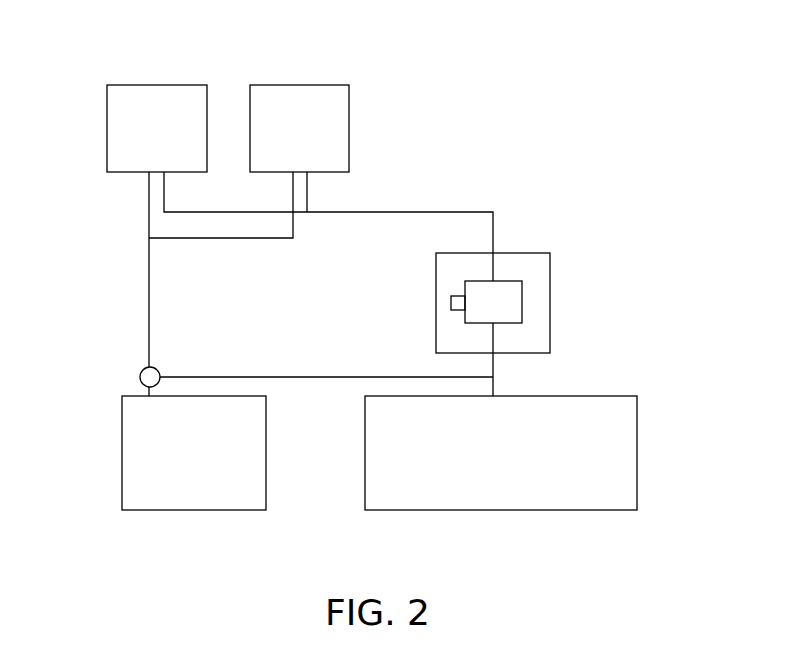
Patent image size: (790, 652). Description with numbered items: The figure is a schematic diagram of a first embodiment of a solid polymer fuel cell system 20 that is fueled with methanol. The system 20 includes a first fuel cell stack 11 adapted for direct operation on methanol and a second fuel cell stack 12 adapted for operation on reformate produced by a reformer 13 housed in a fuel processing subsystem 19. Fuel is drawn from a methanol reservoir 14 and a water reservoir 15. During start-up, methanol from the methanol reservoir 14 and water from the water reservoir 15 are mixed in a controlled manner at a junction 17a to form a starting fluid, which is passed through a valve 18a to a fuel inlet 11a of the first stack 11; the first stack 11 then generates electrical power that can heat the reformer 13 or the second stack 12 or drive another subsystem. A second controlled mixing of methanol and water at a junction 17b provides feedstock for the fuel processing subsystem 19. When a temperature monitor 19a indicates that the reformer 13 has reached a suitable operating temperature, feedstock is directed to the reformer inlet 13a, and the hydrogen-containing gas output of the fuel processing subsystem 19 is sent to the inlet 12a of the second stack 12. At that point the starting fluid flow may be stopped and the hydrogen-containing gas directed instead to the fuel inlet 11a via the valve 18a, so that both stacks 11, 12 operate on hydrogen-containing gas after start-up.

The system 20 is at (650, 75).
The water reservoir 15 is at (178, 100).
The methanol reservoir 14 is at (323, 100).
The junction 17a is at (146, 236).
The junction 17b is at (310, 209).
The valve 18a is at (143, 369).
The fuel processing subsystem 19 is at (445, 271).
The temperature monitor 19a is at (450, 302).
The reformer 13 is at (505, 302).
The reformer inlet 13a is at (500, 273).
The first fuel cell stack 11 is at (143, 437).
The fuel inlet 11a is at (155, 402).
The second fuel cell stack 12 is at (601, 413).
The inlet 12a is at (499, 402).